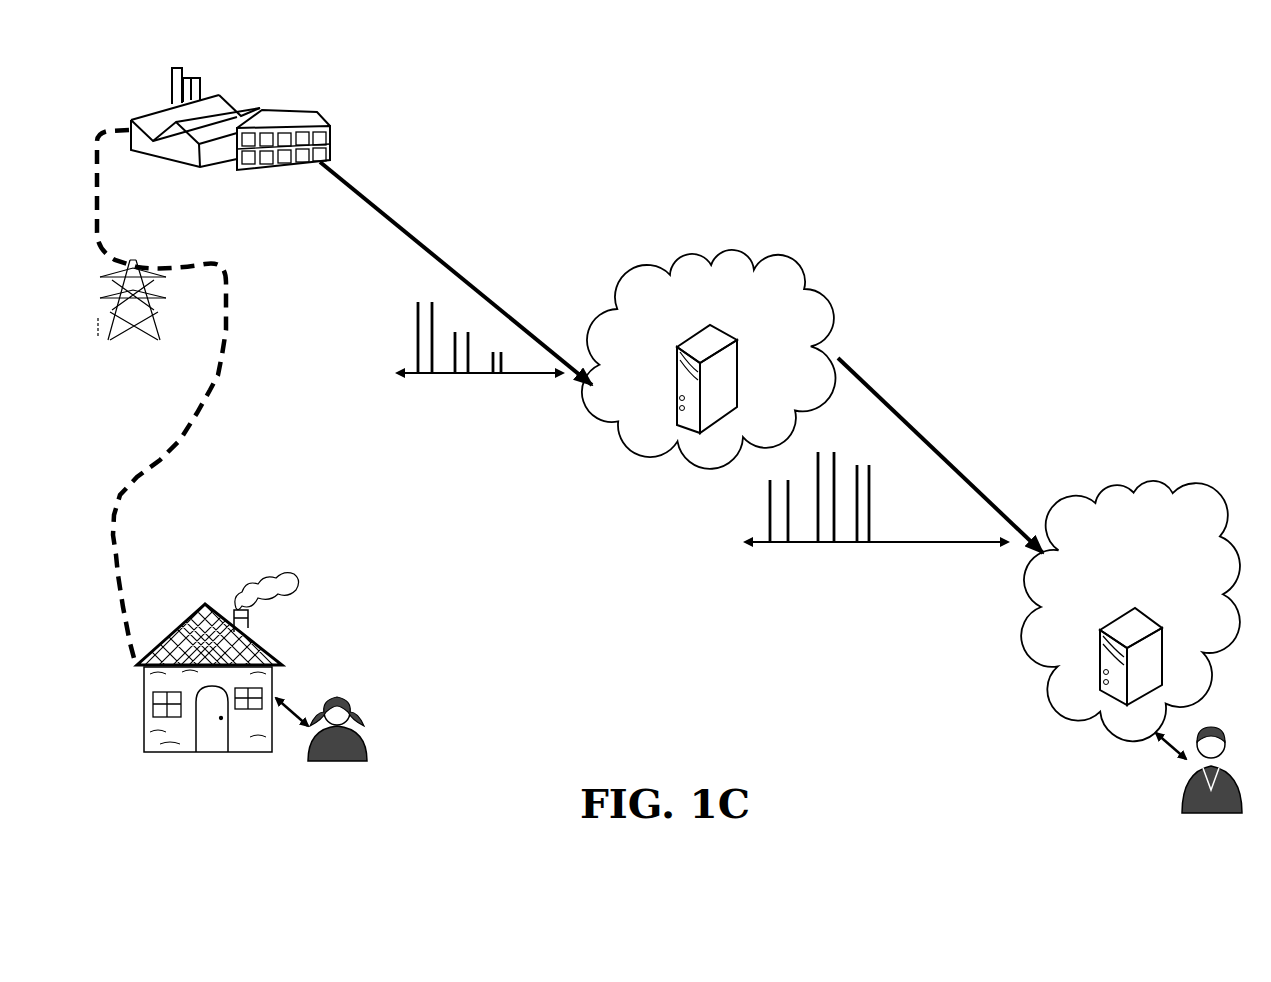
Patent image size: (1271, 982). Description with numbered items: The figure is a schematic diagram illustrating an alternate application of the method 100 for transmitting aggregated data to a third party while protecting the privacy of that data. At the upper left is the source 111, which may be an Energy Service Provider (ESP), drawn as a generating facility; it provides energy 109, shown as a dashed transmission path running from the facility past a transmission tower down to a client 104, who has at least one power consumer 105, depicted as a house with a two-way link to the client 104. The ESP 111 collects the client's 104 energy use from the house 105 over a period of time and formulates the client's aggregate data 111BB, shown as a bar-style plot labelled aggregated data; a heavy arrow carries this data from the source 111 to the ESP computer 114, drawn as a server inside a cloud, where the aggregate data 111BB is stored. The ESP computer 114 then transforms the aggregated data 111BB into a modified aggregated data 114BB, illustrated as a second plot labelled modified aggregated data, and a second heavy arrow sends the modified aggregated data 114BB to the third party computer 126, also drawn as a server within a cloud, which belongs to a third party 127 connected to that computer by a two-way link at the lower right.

The method 100 is at (1031, 214).
The source 111 is at (333, 147).
The energy 109 is at (196, 422).
The power consumer 105 is at (146, 694).
The client 104 is at (307, 756).
The aggregate data 111BB is at (414, 371).
The ESP computer 114 is at (724, 250).
The modified aggregated data 114BB is at (764, 540).
The third party computer 126 is at (1148, 486).
The third party 127 is at (1184, 780).